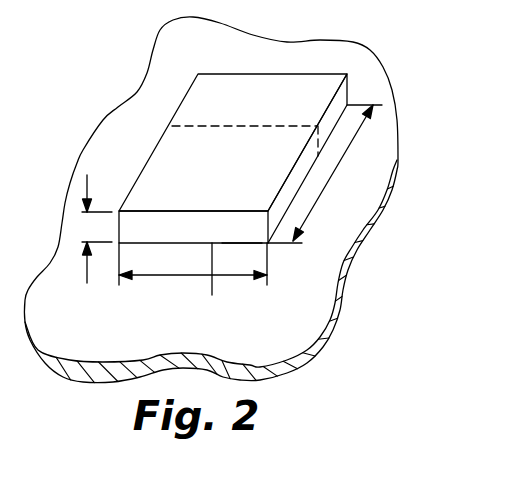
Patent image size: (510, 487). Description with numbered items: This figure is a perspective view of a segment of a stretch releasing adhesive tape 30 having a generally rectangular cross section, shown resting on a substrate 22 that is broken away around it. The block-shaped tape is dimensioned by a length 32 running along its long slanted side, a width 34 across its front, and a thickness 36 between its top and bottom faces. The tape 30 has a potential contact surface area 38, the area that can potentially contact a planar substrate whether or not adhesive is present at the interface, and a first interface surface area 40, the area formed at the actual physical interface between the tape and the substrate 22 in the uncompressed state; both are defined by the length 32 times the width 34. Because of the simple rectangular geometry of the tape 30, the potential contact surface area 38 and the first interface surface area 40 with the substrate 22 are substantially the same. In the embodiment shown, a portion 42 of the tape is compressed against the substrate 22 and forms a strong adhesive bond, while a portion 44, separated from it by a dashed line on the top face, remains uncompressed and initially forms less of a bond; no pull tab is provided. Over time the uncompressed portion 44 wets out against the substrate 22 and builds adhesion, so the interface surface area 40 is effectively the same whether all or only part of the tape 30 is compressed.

The substrate 22 is at (76, 352).
The stretch releasing adhesive tape 30 is at (199, 158).
The length 32 is at (350, 143).
The width 34 is at (173, 275).
The thickness 36 is at (87, 176).
The potential contact surface area 38 is at (241, 247).
The first interface surface area 40 is at (213, 280).
The compressed portion 42 is at (238, 180).
The uncompressed portion 44 is at (243, 110).